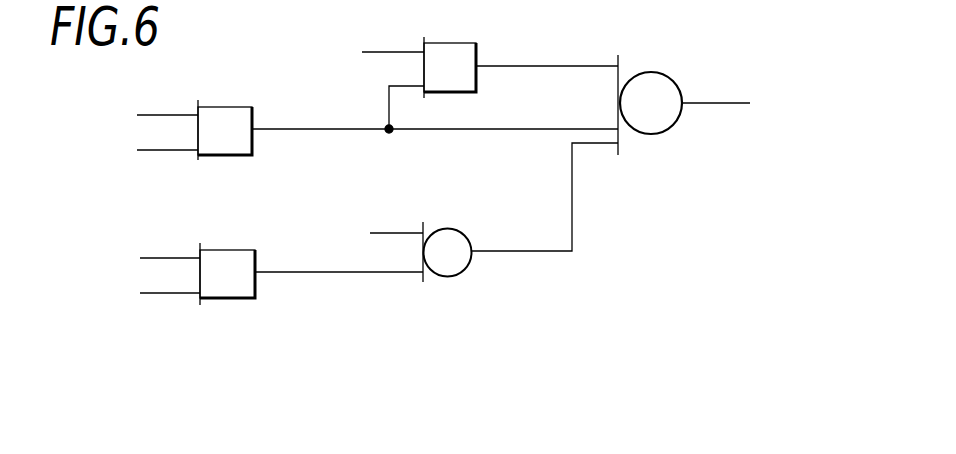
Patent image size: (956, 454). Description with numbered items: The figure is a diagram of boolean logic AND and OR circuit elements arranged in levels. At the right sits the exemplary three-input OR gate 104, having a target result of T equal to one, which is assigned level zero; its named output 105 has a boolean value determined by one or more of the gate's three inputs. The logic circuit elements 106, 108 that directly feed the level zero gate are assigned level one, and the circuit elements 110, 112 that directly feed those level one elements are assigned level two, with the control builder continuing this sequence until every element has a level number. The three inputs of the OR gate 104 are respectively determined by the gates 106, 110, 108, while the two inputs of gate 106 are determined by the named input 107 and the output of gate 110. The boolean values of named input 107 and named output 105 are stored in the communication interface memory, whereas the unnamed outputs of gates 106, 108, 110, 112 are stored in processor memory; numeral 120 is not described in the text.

The three-input OR gate 104 is at (657, 134).
The named output 105 is at (707, 101).
The logic circuit element 106 is at (465, 92).
The named input 107 is at (398, 51).
The logic circuit element 108 is at (452, 277).
The circuit element 110 is at (233, 155).
The circuit element 112 is at (238, 298).
The logic circuit 120 is at (611, 443).